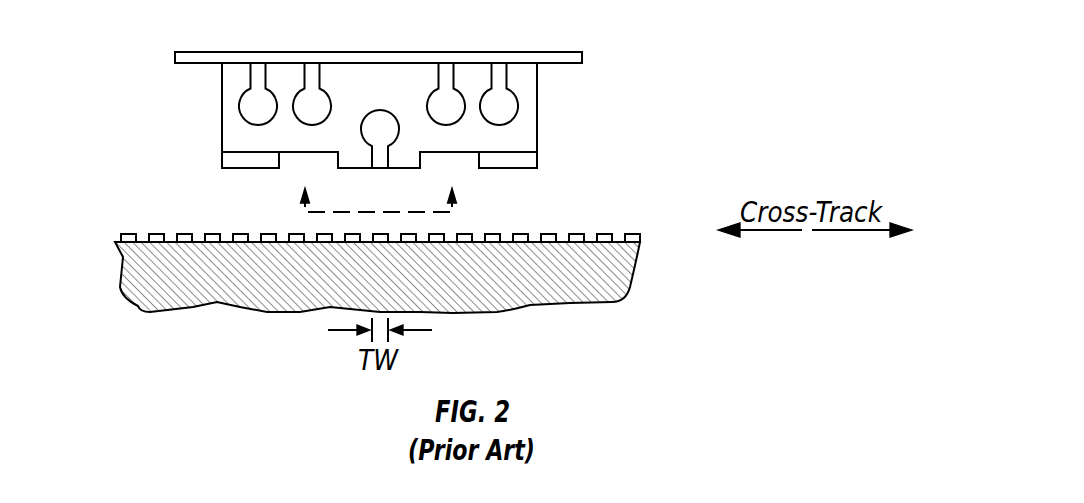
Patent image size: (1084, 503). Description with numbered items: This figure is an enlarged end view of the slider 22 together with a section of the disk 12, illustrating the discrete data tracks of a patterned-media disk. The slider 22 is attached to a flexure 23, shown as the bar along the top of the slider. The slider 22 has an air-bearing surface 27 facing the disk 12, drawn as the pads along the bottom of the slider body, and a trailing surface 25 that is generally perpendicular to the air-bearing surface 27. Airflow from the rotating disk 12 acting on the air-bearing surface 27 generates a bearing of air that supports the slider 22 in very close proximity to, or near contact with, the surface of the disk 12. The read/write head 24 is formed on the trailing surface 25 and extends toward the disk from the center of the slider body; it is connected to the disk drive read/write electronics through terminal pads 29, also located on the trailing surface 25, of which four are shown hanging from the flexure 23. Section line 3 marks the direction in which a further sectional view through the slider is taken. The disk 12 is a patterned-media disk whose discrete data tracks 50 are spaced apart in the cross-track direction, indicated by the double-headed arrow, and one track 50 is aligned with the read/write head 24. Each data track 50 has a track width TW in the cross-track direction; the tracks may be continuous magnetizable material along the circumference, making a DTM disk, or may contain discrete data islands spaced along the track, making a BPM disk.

The section line 3- 3 is at (378, 186).
The disk 12 is at (620, 275).
The slider 22 is at (537, 138).
The flexure 23 is at (567, 52).
The read/write head 24 is at (379, 110).
The trailing surface 25 is at (235, 137).
The air-bearing surface (ABS) 27 is at (251, 170).
The terminal pads 29 is at (247, 108).
The data tracks 50 is at (155, 234).